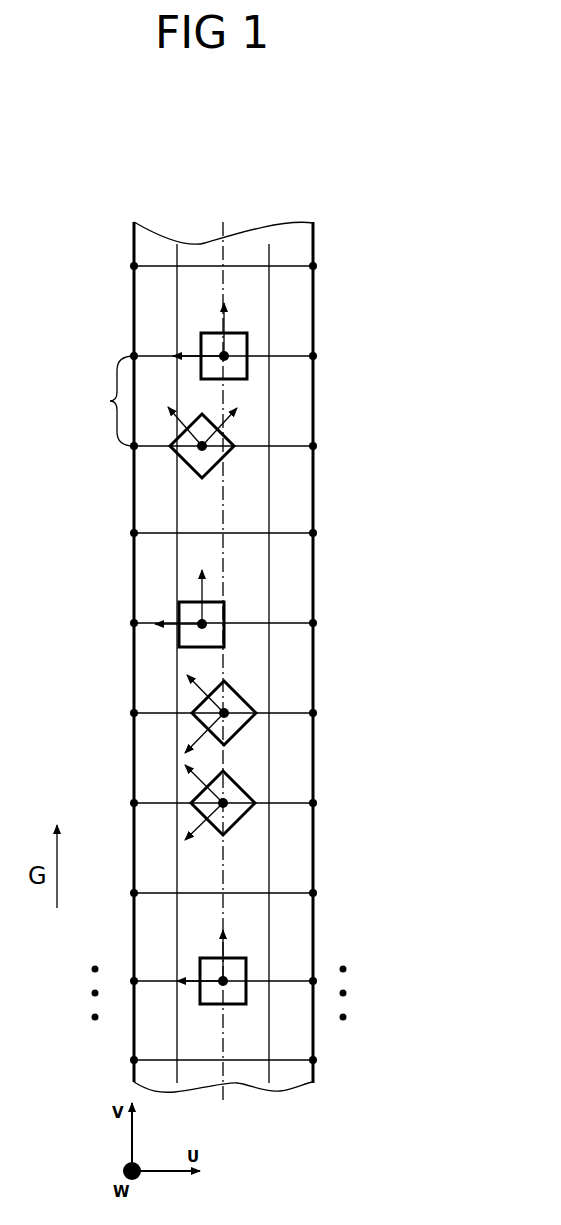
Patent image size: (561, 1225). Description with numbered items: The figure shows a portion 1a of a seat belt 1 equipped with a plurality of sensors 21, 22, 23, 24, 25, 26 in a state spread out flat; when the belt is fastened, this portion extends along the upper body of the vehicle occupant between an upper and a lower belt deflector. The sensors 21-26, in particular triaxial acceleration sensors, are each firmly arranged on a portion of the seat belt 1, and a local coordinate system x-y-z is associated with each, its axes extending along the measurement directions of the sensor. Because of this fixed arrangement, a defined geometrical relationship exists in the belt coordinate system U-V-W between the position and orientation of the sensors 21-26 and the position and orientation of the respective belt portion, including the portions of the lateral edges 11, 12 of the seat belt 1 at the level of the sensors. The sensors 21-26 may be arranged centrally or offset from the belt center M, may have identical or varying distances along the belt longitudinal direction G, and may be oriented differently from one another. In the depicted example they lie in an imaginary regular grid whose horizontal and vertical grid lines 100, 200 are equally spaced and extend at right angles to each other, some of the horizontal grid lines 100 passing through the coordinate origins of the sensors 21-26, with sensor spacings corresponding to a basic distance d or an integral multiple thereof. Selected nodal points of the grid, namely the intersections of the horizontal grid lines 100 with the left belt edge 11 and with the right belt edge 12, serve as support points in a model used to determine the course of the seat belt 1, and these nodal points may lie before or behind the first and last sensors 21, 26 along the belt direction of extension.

The seat belt 1 is at (250, 637).
The portion of the seat belt 1a is at (377, 624).
The left belt edge 11 is at (133, 677).
The right belt edge 12 is at (315, 665).
The sensor 21 is at (323, 940).
The sensor 22 is at (230, 810).
The sensor 23 is at (230, 722).
The sensor 24 is at (213, 613).
The sensor 25 is at (215, 456).
The sensor 26 is at (235, 345).
The horizontal grid lines 100 is at (285, 533).
The vertical grid lines 200 is at (177, 503).